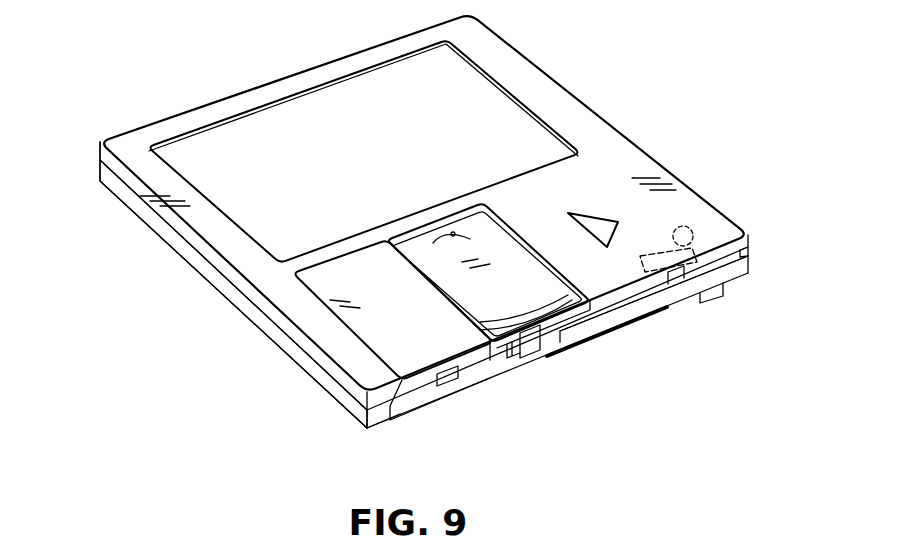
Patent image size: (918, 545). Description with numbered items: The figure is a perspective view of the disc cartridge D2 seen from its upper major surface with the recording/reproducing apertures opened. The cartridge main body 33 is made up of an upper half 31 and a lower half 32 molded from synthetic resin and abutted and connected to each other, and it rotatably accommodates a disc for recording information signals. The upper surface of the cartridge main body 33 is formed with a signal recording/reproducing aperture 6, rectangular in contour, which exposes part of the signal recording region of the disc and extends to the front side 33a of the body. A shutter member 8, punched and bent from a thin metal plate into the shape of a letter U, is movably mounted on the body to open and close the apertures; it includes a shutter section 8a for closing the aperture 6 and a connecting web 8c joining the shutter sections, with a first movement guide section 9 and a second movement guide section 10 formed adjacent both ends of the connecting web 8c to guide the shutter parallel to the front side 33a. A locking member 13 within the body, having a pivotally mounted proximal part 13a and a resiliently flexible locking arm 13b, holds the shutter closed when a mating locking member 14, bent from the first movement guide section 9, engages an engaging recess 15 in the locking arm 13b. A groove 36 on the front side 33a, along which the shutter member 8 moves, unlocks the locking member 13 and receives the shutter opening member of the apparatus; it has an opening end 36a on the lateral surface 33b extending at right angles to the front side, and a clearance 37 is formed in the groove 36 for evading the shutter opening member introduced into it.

The disc cartridge D2 is at (540, 56).
The signal recording/reproducing aperture 6 is at (453, 233).
The shutter member 8 is at (432, 404).
The shutter section 8a is at (337, 306).
The connecting web 8c is at (470, 384).
The first movement guide section 9 is at (508, 372).
The second movement guide section 10 is at (397, 412).
The locking member 13 is at (697, 240).
The proximal part 13a is at (687, 224).
The locking arm 13b is at (714, 288).
The mating locking member 14 is at (530, 345).
The engaging recess 15 is at (674, 280).
The upper half 31 is at (100, 158).
The lower half 32 is at (100, 178).
The cartridge main body 33 is at (44, 133).
The front side 33a is at (681, 312).
The lateral surface 33b is at (667, 170).
The groove 36 is at (598, 315).
The opening end 36a is at (748, 256).
The clearance 37 is at (622, 310).